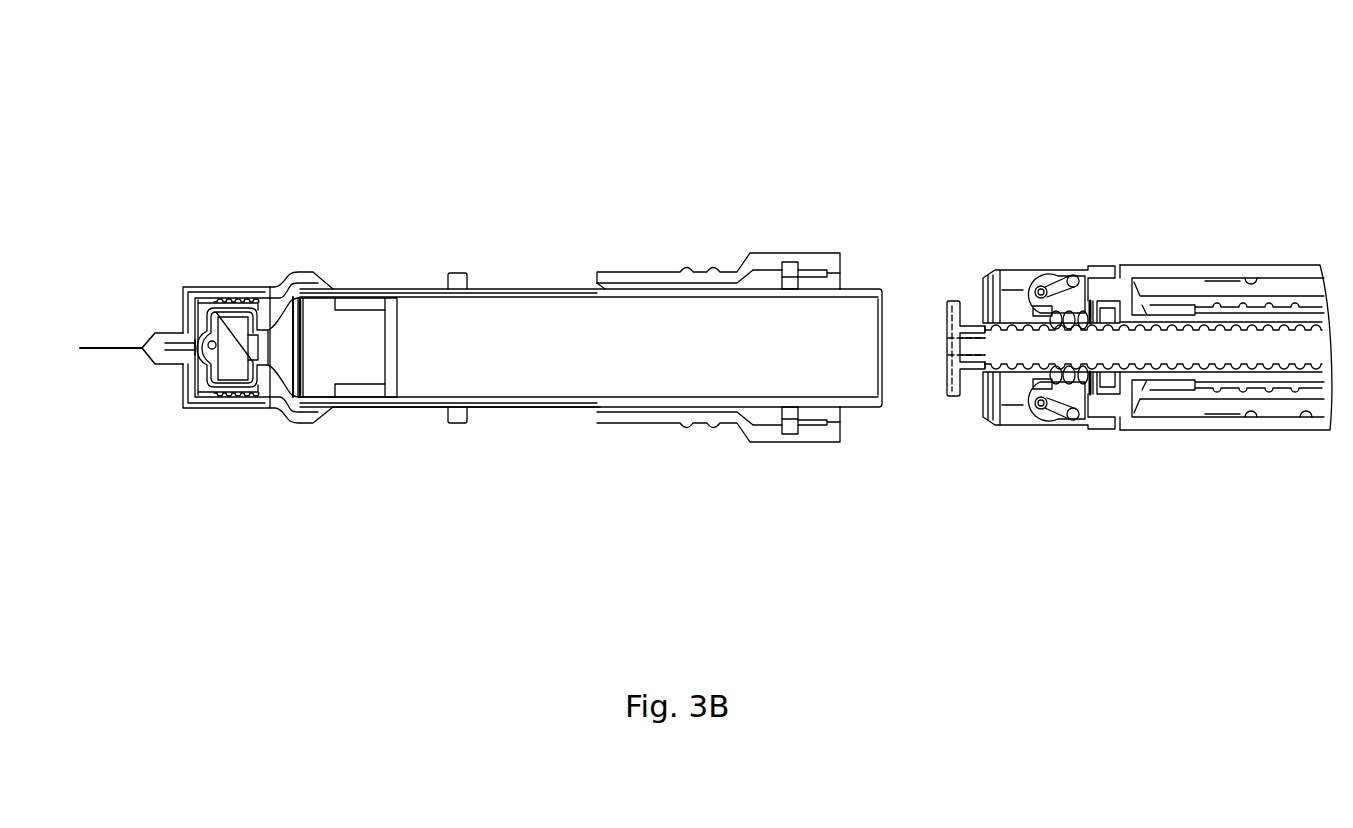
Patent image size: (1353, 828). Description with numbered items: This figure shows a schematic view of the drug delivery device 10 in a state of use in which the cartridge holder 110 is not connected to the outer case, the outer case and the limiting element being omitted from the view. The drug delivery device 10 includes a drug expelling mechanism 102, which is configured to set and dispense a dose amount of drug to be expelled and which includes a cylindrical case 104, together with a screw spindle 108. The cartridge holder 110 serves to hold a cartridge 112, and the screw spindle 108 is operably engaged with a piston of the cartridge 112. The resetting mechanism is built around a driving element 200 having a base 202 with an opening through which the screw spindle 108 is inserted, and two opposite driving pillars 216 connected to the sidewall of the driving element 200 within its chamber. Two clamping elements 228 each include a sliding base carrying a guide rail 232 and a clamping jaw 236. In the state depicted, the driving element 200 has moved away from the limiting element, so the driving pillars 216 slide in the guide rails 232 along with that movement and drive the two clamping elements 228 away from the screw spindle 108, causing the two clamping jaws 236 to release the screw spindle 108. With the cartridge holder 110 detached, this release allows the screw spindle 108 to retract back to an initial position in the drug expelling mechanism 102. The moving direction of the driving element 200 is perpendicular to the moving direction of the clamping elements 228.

The drug delivery device 10 is at (352, 157).
The drug expelling mechanism 102 is at (1251, 255).
The cylindrical case 104 is at (1293, 272).
The screw spindle 108 is at (1210, 352).
The cartridge holder 110 is at (667, 272).
The cartridge 112 is at (858, 400).
The driving element 200 is at (1005, 440).
The base 202 is at (986, 272).
The driving pillar 216 is at (1037, 272).
The clamping element 228 is at (1061, 258).
The guide rail 232 is at (1072, 272).
The clamping jaw 236 is at (1082, 322).